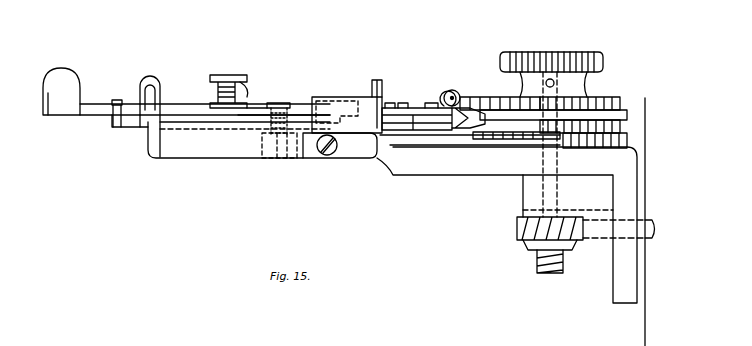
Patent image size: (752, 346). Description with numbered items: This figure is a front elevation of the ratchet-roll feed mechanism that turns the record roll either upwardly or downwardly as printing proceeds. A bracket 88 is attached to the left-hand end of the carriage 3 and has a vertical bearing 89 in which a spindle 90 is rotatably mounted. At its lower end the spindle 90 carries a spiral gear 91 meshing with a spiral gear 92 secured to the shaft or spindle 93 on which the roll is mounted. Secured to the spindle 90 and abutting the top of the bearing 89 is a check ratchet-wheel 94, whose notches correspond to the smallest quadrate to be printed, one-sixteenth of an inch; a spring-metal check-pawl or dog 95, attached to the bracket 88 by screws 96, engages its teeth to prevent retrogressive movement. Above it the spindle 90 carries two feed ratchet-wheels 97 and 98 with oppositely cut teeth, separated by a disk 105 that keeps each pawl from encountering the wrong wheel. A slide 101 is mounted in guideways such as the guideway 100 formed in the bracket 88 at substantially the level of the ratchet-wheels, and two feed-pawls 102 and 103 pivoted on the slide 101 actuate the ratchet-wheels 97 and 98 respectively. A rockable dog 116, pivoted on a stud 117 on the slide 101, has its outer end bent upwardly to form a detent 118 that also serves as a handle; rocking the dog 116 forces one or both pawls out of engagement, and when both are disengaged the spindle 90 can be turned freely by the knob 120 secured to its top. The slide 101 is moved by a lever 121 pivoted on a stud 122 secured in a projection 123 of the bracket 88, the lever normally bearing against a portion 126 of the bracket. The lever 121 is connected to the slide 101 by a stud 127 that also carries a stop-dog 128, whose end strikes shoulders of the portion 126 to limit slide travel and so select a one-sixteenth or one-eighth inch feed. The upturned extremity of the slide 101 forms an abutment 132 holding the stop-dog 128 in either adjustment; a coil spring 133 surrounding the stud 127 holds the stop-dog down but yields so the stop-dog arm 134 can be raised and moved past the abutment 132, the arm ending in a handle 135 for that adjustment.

The carriage 3 is at (647, 200).
The bracket 88 is at (425, 173).
The vertical bearing 89 is at (523, 191).
The spindle 90 is at (560, 168).
The spiral gear 91 is at (517, 229).
The spiral gear 92 is at (540, 275).
The shaft or spindle 93 is at (652, 240).
The check ratchet-wheel 94 is at (629, 142).
The check-pawl or dog 95 is at (450, 146).
The screws 96 is at (327, 156).
The feed ratchet-wheel 97 is at (608, 99).
The feed ratchet-wheel 98 is at (622, 126).
The guideway 100 is at (203, 130).
The slide 101 is at (121, 128).
The feed-pawl 102 is at (478, 103).
The feed-pawl 103 is at (500, 140).
The disk 105 is at (628, 115).
The rockable dog 116 is at (405, 124).
The stud 117 is at (447, 100).
The detent 118 is at (378, 82).
The knob 120 is at (515, 53).
The lever 121 is at (238, 130).
The stud 122 is at (285, 110).
The projection 123 is at (296, 160).
The portion 126 is at (168, 100).
The stud 127 is at (238, 76).
The stop-dog 128 is at (253, 112).
The abutment 132 is at (120, 100).
The coil spring 133 is at (247, 88).
The stop-dog arm 134 is at (100, 113).
The handle 135 is at (62, 76).